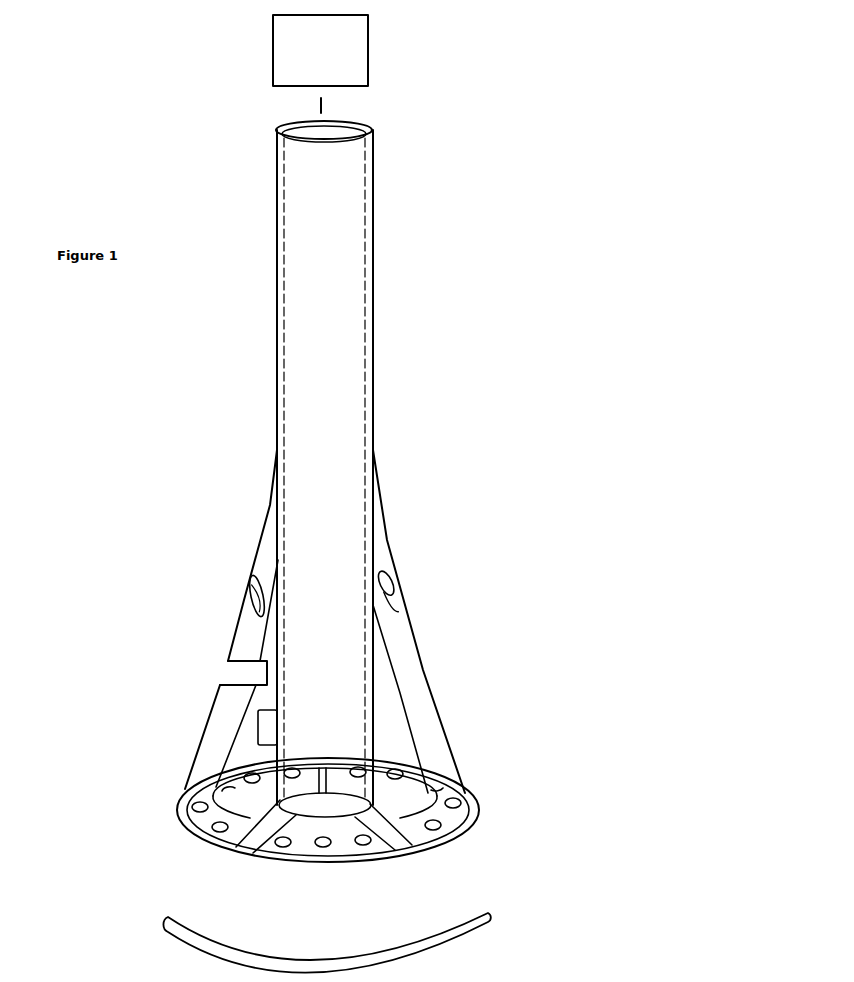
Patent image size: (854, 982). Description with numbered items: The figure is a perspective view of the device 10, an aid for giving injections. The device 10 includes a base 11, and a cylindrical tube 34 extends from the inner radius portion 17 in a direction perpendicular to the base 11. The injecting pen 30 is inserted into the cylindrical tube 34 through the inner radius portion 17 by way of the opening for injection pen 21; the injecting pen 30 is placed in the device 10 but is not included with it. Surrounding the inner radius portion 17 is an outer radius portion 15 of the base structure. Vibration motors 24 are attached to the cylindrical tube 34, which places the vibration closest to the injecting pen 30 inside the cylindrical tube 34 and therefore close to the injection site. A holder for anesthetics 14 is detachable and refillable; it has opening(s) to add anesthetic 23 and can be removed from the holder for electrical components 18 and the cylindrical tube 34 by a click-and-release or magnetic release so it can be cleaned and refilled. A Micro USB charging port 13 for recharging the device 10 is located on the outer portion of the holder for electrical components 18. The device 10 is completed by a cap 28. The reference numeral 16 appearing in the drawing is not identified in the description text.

The device 10 is at (308, 502).
The base 11 is at (457, 828).
The Micro USB charging port 13 is at (267, 674).
The holder for anesthetics 14 is at (417, 695).
The outer radius portion 15 is at (238, 847).
The bolt holes 16 is at (433, 826).
The inner radius portion 17 is at (340, 817).
The holder for electrical components 18 is at (400, 735).
The opening for injection pen 21 is at (322, 136).
The opening(s) to add anesthetic 23 is at (255, 582).
The vibration motors 24 is at (268, 728).
The cap 28 is at (168, 937).
The injecting pen 30 is at (334, 60).
The cylindrical tube 34 is at (350, 272).